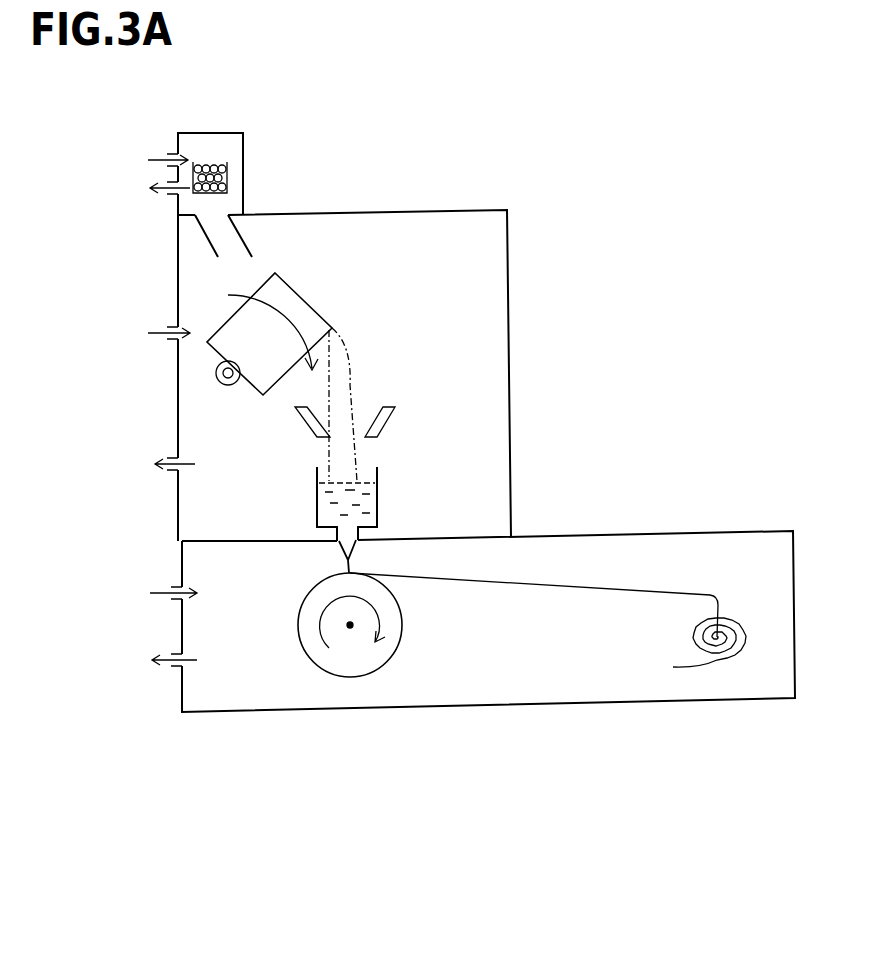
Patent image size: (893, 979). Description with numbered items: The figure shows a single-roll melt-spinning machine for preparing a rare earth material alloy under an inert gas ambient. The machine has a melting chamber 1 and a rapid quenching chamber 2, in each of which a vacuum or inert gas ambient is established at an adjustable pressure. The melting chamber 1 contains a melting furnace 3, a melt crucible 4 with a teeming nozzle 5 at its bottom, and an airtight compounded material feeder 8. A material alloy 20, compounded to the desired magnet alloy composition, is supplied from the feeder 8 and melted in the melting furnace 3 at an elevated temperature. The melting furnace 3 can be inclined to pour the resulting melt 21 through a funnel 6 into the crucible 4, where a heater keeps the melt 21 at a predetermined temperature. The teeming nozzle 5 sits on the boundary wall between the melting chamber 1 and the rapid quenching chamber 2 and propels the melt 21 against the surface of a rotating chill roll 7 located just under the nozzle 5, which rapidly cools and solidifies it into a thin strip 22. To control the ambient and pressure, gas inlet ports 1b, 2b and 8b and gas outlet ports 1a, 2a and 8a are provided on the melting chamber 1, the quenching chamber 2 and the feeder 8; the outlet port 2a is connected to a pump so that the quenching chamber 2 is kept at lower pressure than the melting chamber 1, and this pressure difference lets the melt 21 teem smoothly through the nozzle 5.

The melting chamber 1 is at (508, 278).
The gas outlet port 1a is at (152, 464).
The gas inlet port 1b is at (150, 333).
The rapid quenching chamber 2 is at (650, 533).
The gas outlet port 2a is at (153, 660).
The gas inlet port 2b is at (153, 595).
The melting furnace 3 is at (275, 357).
The melt crucible 4 is at (377, 497).
The teeming nozzle 5 is at (343, 548).
The funnel 6 is at (298, 413).
The chill roll 7 is at (298, 619).
The compounded material feeder 8 is at (200, 133).
The gas outlet port 8a is at (148, 190).
The gas inlet port 8b is at (147, 158).
The material alloy 20 is at (227, 172).
The melt 21 is at (318, 498).
The thin strip 22 is at (487, 582).